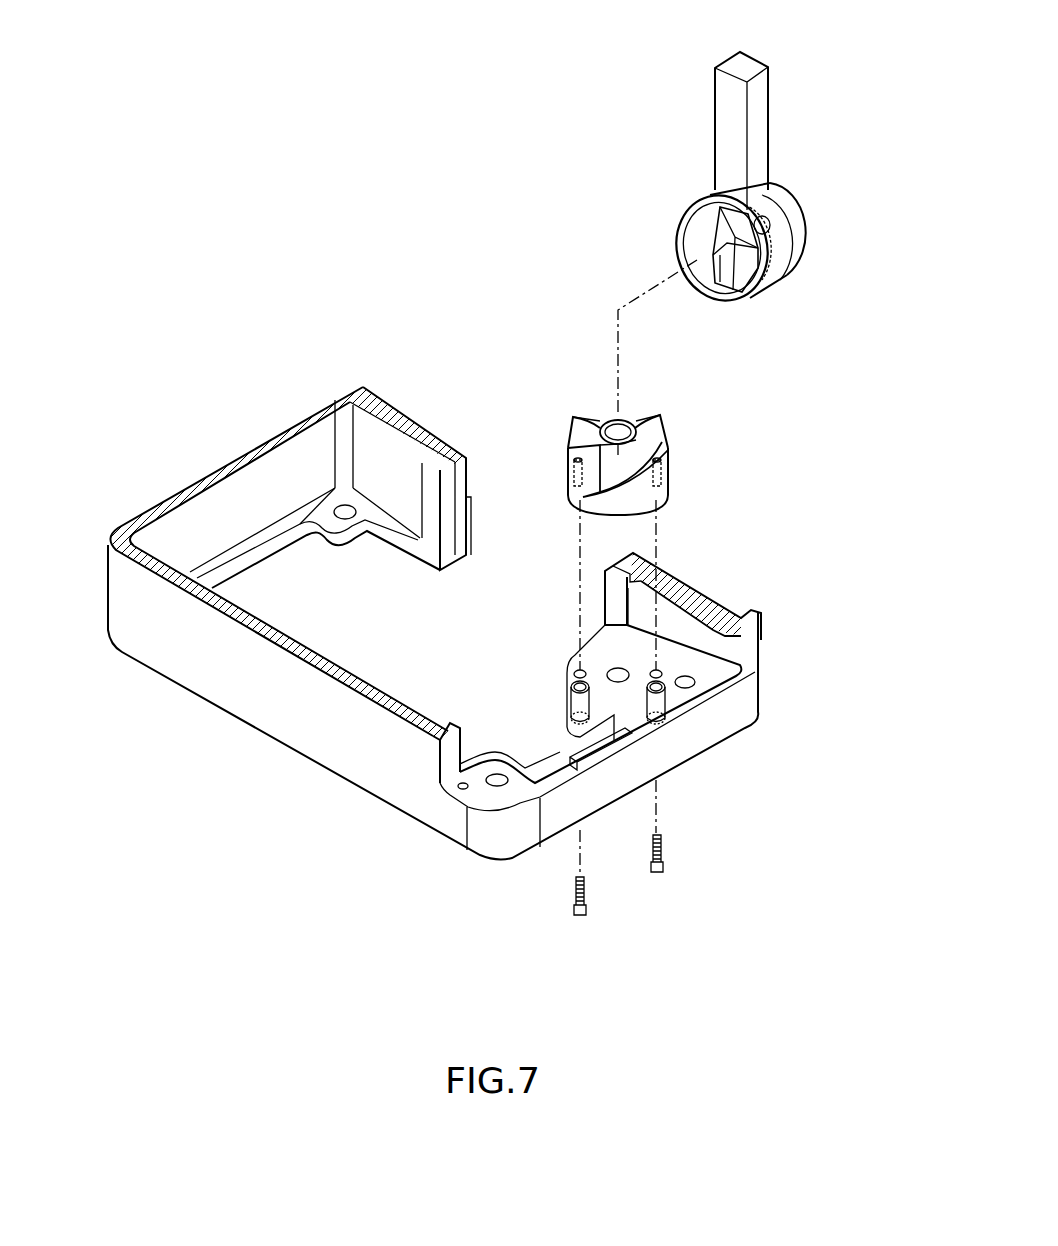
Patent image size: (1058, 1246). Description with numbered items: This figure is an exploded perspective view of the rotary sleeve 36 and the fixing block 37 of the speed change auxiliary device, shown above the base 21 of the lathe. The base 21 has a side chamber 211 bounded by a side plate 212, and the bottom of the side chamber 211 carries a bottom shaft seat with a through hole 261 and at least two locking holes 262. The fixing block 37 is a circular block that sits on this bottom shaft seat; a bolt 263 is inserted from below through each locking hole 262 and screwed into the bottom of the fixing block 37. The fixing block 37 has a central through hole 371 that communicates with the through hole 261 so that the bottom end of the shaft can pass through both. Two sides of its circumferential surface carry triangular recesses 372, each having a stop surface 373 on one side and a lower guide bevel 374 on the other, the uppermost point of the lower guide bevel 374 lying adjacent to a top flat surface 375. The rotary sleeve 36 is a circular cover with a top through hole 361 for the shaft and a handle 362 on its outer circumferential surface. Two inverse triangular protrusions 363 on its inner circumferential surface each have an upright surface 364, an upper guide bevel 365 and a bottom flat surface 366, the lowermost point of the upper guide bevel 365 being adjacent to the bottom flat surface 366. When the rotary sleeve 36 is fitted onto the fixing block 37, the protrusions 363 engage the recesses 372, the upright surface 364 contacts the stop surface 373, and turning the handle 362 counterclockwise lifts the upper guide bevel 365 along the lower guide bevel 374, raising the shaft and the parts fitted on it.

The base 21 is at (212, 665).
The side chamber 211 is at (300, 595).
The side plate 212 is at (690, 636).
The through hole 261 is at (622, 690).
The locking holes 262 is at (680, 686).
The screw 263 is at (664, 852).
The rotary sleeve 36 is at (712, 180).
The top through hole 361 is at (778, 222).
The handle 362 is at (718, 105).
The inverse triangular protrusions 363 is at (770, 260).
The upright surface 364 is at (755, 300).
The upper guide bevel 365 is at (712, 228).
The bottom flat surface 366 is at (720, 295).
The fixing block 37 is at (672, 466).
The central through hole 371 is at (618, 428).
The triangular recesses 372 is at (620, 412).
The stop surface 373 is at (584, 470).
The lower guide bevel 374 is at (632, 472).
The top flat surface 375 is at (660, 437).